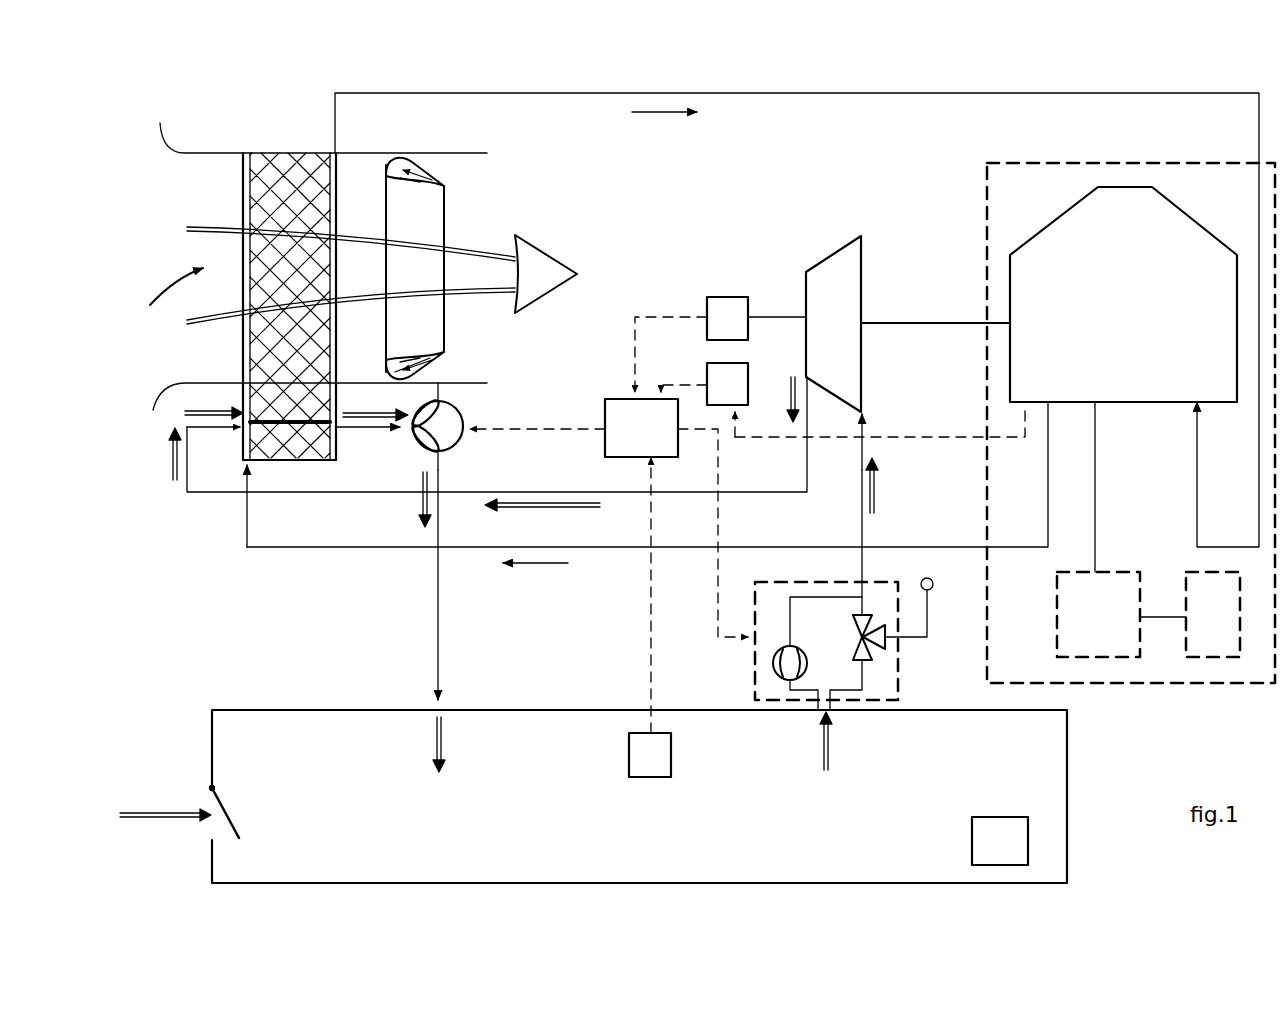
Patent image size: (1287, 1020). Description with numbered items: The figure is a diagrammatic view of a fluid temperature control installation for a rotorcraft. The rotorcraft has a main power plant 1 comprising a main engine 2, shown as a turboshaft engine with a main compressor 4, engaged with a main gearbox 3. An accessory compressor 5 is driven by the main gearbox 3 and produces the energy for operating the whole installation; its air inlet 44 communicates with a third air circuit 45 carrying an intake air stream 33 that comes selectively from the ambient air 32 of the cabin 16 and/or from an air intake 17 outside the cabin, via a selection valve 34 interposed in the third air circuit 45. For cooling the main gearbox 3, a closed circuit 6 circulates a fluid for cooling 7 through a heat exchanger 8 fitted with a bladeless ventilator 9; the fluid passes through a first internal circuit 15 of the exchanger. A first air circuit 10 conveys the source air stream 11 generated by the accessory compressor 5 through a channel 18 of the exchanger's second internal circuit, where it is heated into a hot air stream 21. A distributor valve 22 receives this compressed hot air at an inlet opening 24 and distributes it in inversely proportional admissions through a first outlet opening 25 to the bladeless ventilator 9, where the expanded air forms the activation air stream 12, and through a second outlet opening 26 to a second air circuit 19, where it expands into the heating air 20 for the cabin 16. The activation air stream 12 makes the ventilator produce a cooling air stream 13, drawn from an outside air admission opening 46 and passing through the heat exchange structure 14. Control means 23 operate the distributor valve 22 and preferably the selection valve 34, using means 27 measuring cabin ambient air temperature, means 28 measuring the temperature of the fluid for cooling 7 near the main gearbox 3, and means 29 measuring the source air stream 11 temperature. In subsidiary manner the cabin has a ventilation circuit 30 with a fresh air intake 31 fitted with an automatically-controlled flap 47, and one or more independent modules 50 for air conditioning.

The main power plant 1 is at (1122, 163).
The main engine 2 is at (1098, 614).
The main gearbox 3 is at (1123, 294).
The main compressor 4 is at (1213, 614).
The accessory compressor 5 is at (898, 329).
The closed circuit 6 is at (762, 93).
The fluid for cooling 7 is at (591, 352).
The heat exchanger 8 is at (273, 145).
The bladeless ventilator 9 is at (447, 218).
The first air circuit 10 is at (372, 492).
The source air stream 11 is at (194, 443).
The activation air stream 12 is at (397, 369).
The cooling air stream 13 is at (546, 274).
The heat exchange structure 14 is at (268, 179).
The first internal circuit 15 is at (243, 355).
The cabin 16 is at (639, 796).
The air intake 17 is at (934, 582).
The channel 18 is at (290, 428).
The second air circuit 19 is at (440, 638).
The heating air 20 is at (454, 744).
The hot air stream 21 is at (387, 457).
The distributor valve 22 is at (466, 414).
The control means 23 is at (609, 477).
The inlet opening 24 is at (412, 431).
The first outlet opening 25 is at (448, 399).
The second outlet opening 26 is at (446, 452).
The means for measuring the temperature of the ambient air 27 is at (650, 617).
The means for measuring the temperature of the fluid for cooling 28 is at (866, 400).
The means for measuring the temperature of the source air stream 29 is at (756, 318).
The ventilation circuit 30 is at (235, 805).
The intake 31 is at (165, 803).
The ambient air 32 is at (826, 757).
The intake air stream 33 is at (888, 485).
The selection valve 34 is at (753, 680).
The air inlet 44 is at (866, 408).
The third air circuit 45 is at (858, 519).
The outside air admission opening 46 is at (164, 302).
The automatically-controlled flap 47 is at (240, 822).
The independent modules 50 is at (1000, 841).